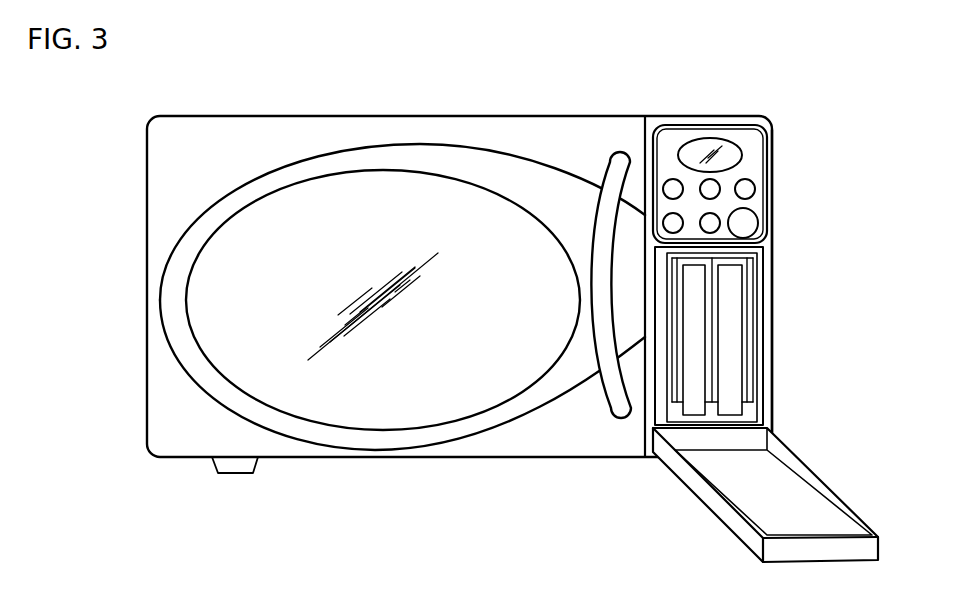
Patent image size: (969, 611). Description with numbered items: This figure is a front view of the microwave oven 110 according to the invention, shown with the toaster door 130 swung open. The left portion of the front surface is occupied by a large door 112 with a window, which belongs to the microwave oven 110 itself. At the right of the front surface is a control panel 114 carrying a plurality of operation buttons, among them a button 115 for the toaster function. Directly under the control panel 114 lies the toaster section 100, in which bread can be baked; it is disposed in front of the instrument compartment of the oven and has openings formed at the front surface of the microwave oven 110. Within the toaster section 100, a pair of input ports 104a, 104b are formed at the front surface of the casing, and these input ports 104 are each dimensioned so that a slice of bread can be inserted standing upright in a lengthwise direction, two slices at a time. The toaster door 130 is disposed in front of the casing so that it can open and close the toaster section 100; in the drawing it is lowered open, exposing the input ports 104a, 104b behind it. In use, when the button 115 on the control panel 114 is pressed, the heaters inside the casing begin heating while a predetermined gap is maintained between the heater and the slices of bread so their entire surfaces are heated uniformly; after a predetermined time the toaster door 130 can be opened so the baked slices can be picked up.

The toaster section 100 is at (782, 368).
The microwave oven 110 is at (617, 95).
The oven door with window 112 is at (365, 385).
The control panel 114 is at (747, 168).
The button 115 is at (668, 230).
The input ports 104 is at (709, 336).
The first input port 104a is at (693, 293).
The second input port 104b is at (728, 328).
The toaster door 130 is at (743, 490).